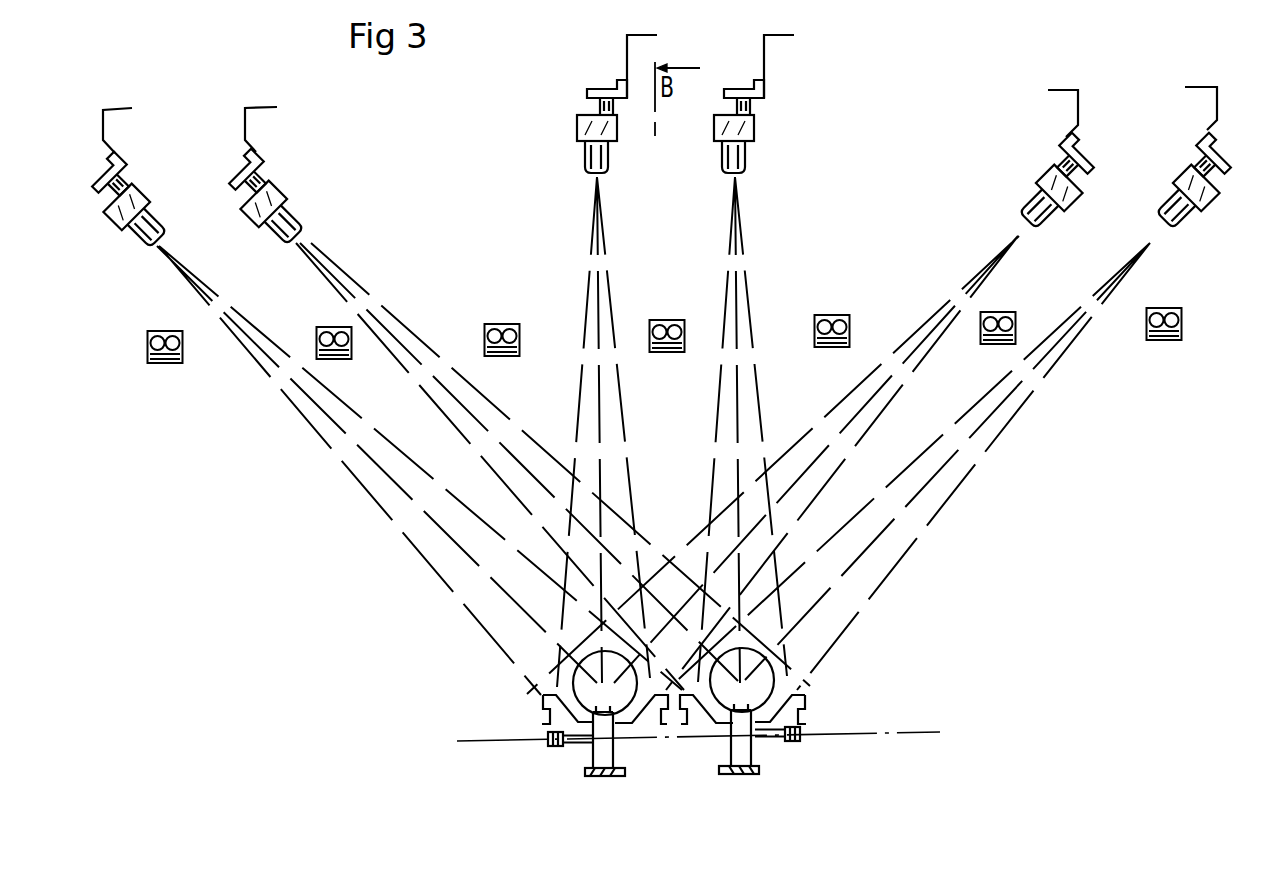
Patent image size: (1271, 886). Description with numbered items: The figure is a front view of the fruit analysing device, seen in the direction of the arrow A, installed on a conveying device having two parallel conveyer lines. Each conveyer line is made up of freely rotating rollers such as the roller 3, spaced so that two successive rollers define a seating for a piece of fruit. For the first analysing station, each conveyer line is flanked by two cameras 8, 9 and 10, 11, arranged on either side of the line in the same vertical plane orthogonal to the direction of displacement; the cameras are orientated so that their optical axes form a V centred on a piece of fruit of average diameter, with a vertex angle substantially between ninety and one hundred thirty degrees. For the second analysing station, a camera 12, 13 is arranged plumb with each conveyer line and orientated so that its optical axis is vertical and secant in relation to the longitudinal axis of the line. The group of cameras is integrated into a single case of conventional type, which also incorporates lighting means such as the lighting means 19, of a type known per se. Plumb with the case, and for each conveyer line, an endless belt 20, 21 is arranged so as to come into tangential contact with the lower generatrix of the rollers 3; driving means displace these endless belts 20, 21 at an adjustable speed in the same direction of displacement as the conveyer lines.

The roller 3 is at (587, 755).
The camera 8 is at (140, 196).
The camera 9 is at (1085, 189).
The camera 10 is at (281, 191).
The camera 11 is at (1222, 190).
The camera 12 is at (577, 130).
The camera 13 is at (754, 121).
The lighting means 19 is at (183, 342).
The endless belt 20 is at (607, 775).
The endless belt 21 is at (745, 775).